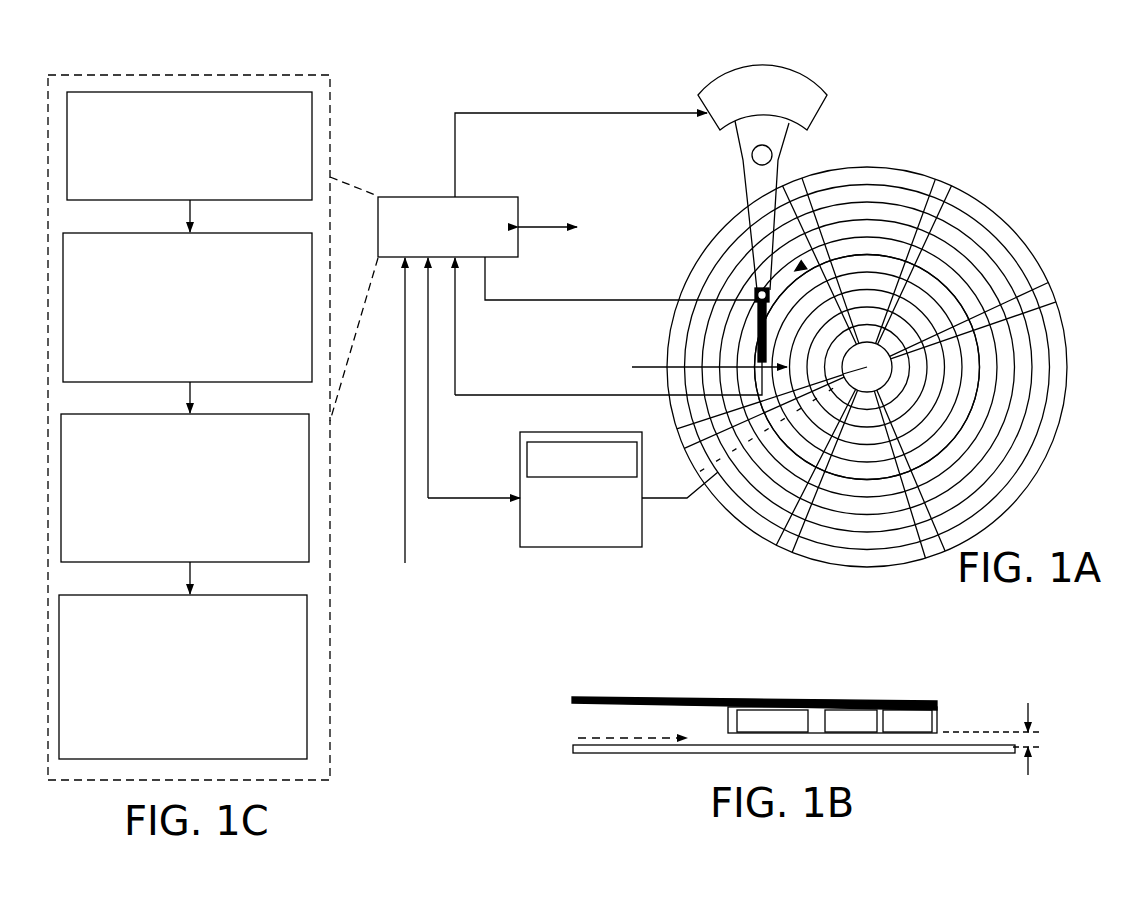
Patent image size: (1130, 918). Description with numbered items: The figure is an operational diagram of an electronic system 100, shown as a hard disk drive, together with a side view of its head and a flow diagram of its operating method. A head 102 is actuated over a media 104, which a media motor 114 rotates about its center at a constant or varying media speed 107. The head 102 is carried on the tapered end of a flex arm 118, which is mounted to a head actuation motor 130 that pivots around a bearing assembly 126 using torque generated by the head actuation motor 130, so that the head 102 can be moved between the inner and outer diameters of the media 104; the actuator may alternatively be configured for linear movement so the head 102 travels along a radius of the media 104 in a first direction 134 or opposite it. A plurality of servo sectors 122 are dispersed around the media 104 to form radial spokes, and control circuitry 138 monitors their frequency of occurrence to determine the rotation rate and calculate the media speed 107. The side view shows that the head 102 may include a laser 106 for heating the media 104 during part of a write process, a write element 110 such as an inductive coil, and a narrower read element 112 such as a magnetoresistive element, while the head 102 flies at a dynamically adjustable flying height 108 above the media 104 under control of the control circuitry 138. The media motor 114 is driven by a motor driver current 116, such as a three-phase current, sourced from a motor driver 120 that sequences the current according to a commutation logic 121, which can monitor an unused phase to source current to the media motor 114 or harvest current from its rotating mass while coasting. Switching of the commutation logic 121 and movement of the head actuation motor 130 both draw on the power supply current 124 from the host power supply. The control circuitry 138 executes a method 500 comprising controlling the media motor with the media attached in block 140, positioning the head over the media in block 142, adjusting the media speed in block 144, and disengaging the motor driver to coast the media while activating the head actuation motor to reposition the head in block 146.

In FIG. 1A, the electronic system 100 is at (992, 76).
In FIG. 1A, the head 102 is at (742, 357).
In FIG. 1B, the head 102 is at (942, 717).
In FIG. 1A, the media 104 is at (997, 217).
In FIG. 1B, the media 104 is at (658, 753).
In FIG. 1B, the laser 106 is at (763, 707).
In FIG. 1A, the media speed 107 is at (873, 243).
In FIG. 1B, the media speed 107 is at (615, 740).
In FIG. 1B, the flying height 108 is at (1033, 716).
In FIG. 1B, the write element 110 is at (868, 708).
In FIG. 1B, the read element 112 is at (930, 707).
In FIG. 1A, the media motor 114 is at (893, 369).
In FIG. 1A, the motor driver current 116 is at (660, 500).
In FIG. 1B, the flex arm 118 is at (683, 700).
In FIG. 1A, the motor driver 120 is at (535, 530).
In FIG. 1A, the commutation logic 121 is at (552, 443).
In FIG. 1A, the servo sectors 122 is at (793, 545).
In FIG. 1A, the power supply current 124 is at (407, 487).
In FIG. 1A, the bearing assembly 126 is at (757, 160).
In FIG. 1A, the head actuation motor 130 is at (793, 97).
In FIG. 1A, the first direction 134 is at (650, 367).
In FIG. 1A, the control circuitry 138 is at (483, 197).
In FIG. 1C, the block 140 is at (257, 200).
In FIG. 1C, the block 142 is at (263, 382).
In FIG. 1C, the block 144 is at (263, 562).
In FIG. 1C, the block 146 is at (270, 759).
In FIG. 1C, the method 500 is at (329, 706).